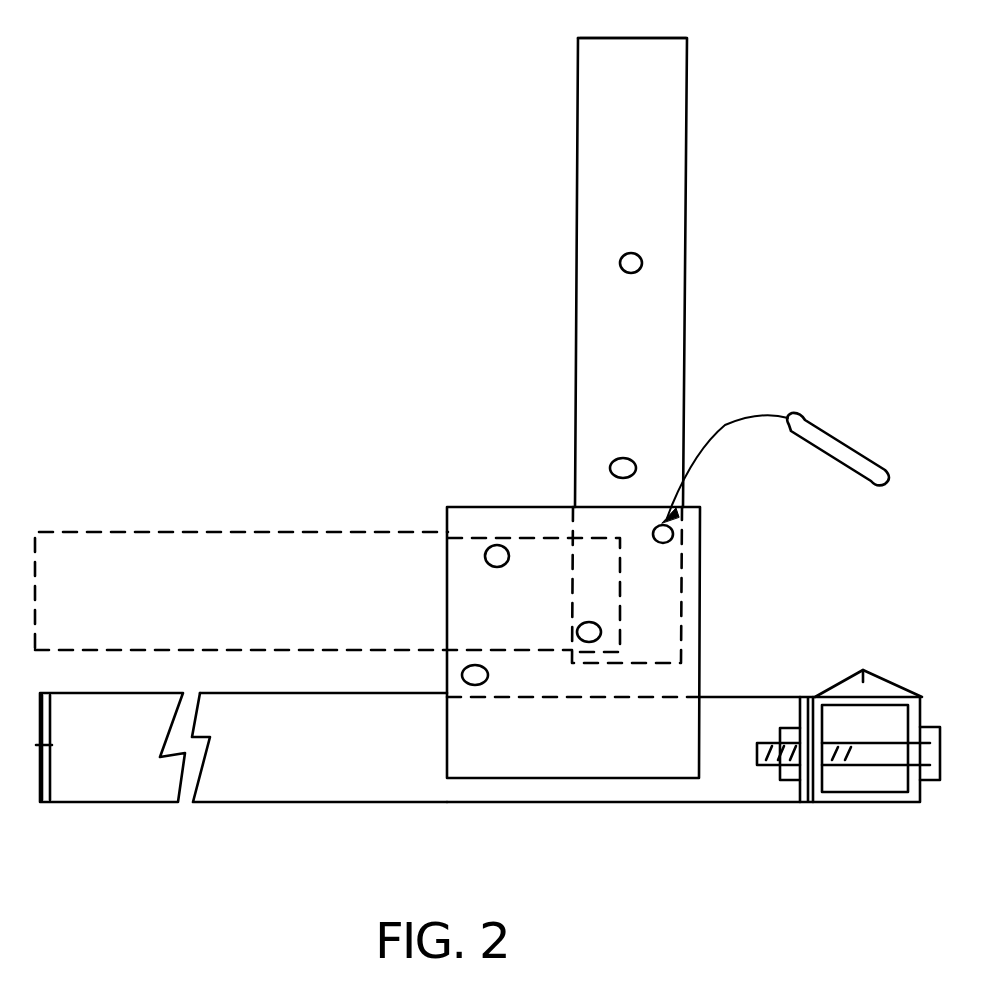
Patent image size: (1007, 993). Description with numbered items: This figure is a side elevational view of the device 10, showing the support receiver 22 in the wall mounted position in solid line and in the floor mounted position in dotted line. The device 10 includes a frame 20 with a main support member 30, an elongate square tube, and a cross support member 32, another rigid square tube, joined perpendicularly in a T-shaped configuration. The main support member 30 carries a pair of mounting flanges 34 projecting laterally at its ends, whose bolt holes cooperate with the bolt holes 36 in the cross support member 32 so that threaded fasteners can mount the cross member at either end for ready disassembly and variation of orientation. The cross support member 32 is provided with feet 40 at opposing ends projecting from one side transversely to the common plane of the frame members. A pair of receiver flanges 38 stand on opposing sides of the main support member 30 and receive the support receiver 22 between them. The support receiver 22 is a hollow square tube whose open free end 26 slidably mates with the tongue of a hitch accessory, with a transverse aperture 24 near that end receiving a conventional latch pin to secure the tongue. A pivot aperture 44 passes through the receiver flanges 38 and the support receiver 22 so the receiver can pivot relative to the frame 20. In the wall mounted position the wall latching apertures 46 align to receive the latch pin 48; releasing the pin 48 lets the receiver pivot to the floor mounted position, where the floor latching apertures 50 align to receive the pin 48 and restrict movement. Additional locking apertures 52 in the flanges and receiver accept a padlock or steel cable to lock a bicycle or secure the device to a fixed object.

The device 10 is at (247, 268).
The frame 20 is at (397, 813).
The support receiver 22 is at (684, 272).
The transverse aperture 24 is at (620, 264).
The open free end 26 is at (632, 38).
The main support member 30 is at (135, 784).
The cross support member 32 is at (870, 776).
The mounting flanges 34 is at (795, 785).
The bolt holes 36 is at (800, 748).
The receiver flanges 38 is at (690, 552).
The feet 40 is at (863, 668).
The pivot aperture 44 is at (602, 628).
The wall latching apertures 46 is at (683, 523).
The latch pin 48 is at (832, 442).
The floor latching apertures 50 is at (485, 552).
The locking apertures 52 is at (610, 462).